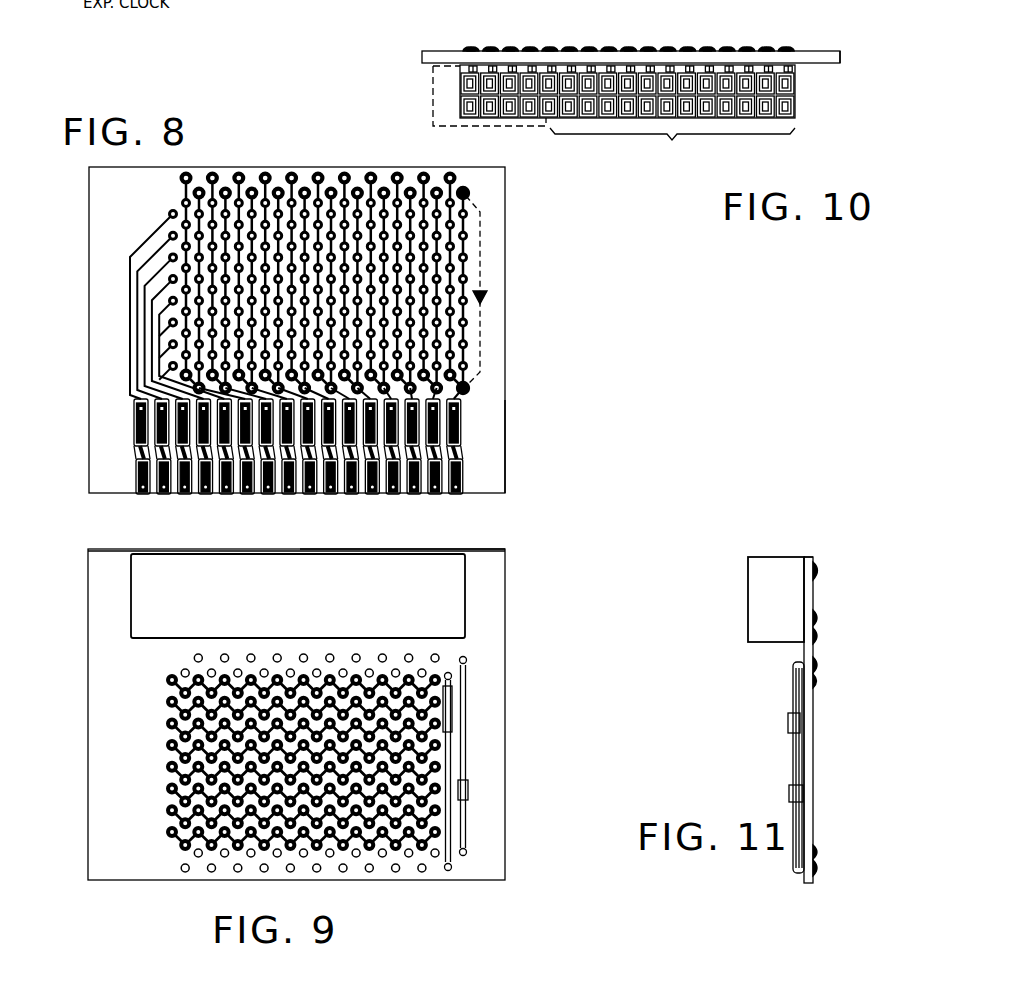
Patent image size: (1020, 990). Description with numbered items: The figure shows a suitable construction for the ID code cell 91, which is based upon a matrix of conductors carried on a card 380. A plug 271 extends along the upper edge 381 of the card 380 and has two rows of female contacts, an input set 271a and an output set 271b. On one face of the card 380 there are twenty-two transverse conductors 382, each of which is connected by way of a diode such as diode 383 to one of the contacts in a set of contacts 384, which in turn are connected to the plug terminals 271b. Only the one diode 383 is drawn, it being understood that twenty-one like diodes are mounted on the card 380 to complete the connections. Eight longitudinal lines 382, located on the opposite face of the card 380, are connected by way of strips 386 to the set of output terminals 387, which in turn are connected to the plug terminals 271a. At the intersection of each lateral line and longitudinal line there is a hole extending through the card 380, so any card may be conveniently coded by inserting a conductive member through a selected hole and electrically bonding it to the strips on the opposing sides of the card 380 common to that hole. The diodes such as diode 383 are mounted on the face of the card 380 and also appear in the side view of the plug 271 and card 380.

In FIG. 8, the ID code cell 91 is at (308, 153).
In FIG. 9, the ID code cell 91 is at (108, 540).
In FIG. 10, the ID code cell 91 is at (640, 31).
In FIG. 11, the ID code cell 91 is at (787, 541).
In FIG. 9, the plug 271 is at (466, 620).
In FIG. 10, the plug 271 is at (797, 100).
In FIG. 11, the plug 271 is at (748, 614).
In FIG. 10, the input set of contacts 271a is at (433, 90).
In FIG. 10, the output set of contacts 271b is at (672, 147).
In FIG. 8, the card 380 is at (498, 239).
In FIG. 9, the card 380 is at (493, 735).
In FIG. 10, the card 380 is at (778, 50).
In FIG. 11, the card 380 is at (815, 875).
In FIG. 8, the upper edge 381 is at (505, 493).
In FIG. 9, the upper edge 381 is at (446, 552).
In FIG. 10, the upper edge 381 is at (838, 58).
In FIG. 11, the upper edge 381 is at (808, 557).
In FIG. 8, the conductors 382 is at (398, 198).
In FIG. 9, the conductors 382 is at (170, 675).
In FIG. 8, the diode 383 is at (487, 298).
In FIG. 9, the diode 383 is at (468, 792).
In FIG. 11, the diode 383 is at (790, 790).
In FIG. 8, the set of contacts 384 is at (458, 497).
In FIG. 8, the strips 386 is at (150, 366).
In FIG. 8, the set of output terminals 387 is at (212, 497).